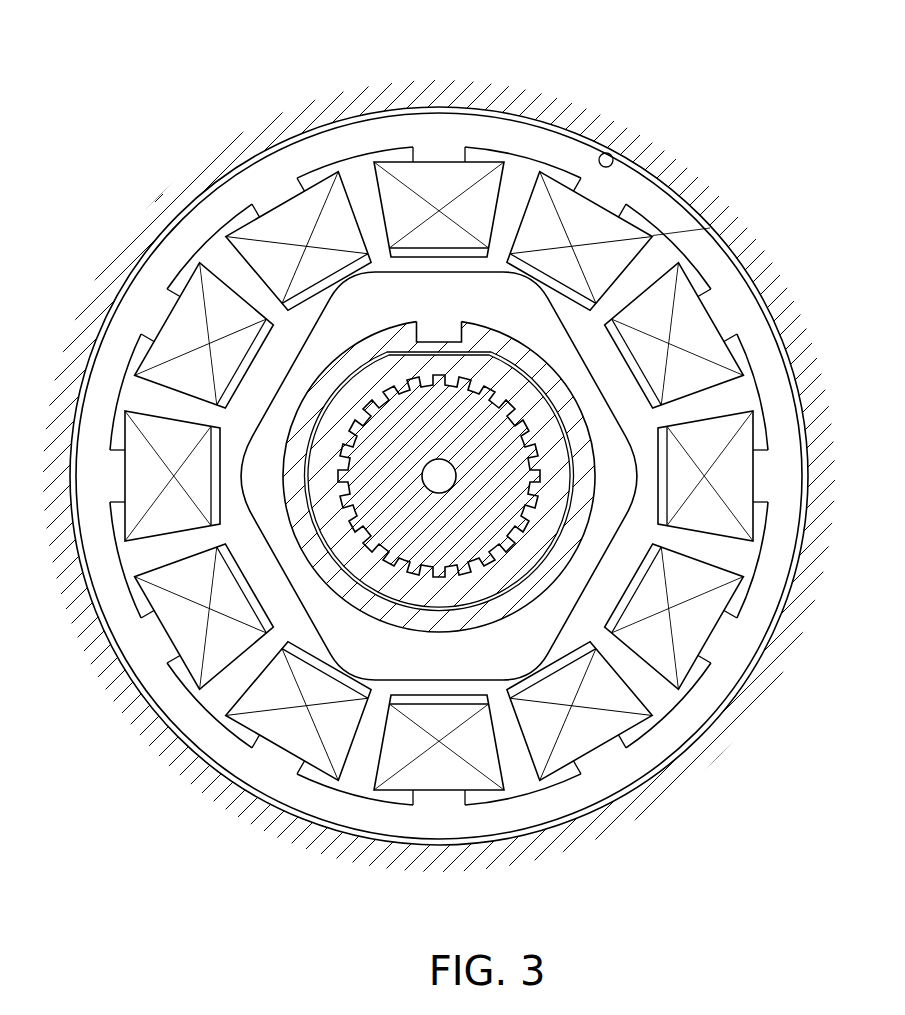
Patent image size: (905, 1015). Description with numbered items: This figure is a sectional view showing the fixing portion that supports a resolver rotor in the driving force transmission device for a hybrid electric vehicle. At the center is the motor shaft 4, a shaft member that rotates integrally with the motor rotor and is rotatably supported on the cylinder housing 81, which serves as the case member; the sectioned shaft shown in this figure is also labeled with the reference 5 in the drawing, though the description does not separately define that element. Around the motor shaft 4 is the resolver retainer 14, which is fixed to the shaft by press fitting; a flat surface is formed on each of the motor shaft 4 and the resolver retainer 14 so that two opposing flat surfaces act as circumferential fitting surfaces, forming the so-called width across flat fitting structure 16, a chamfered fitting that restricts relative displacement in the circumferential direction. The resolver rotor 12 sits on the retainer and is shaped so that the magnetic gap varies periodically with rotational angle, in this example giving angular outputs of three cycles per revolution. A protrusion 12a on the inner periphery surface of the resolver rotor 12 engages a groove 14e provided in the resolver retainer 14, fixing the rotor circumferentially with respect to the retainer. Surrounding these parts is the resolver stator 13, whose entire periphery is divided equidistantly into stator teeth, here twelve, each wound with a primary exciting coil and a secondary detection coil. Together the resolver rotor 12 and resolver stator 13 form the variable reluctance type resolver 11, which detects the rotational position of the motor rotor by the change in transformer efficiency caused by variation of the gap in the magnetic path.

The resolver 11 is at (306, 39).
The resolver stator 13 is at (277, 173).
The cylinder housing 81 is at (628, 158).
The resolver rotor 12 is at (728, 215).
The protrusion 12a is at (430, 331).
The resolver retainer 14 is at (530, 588).
The groove 14e is at (450, 340).
The width across flat fitting structure 16 is at (436, 352).
The motor shaft 4 is at (550, 485).
The shaft 5 is at (390, 493).